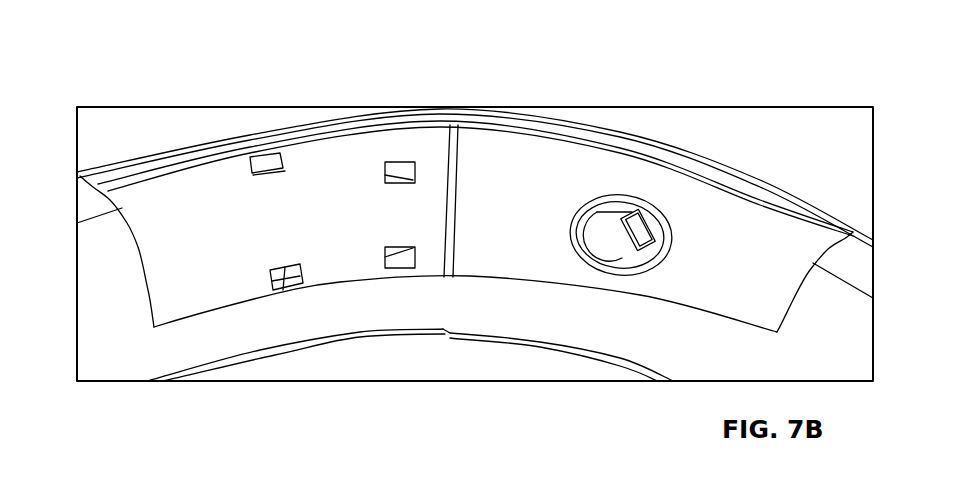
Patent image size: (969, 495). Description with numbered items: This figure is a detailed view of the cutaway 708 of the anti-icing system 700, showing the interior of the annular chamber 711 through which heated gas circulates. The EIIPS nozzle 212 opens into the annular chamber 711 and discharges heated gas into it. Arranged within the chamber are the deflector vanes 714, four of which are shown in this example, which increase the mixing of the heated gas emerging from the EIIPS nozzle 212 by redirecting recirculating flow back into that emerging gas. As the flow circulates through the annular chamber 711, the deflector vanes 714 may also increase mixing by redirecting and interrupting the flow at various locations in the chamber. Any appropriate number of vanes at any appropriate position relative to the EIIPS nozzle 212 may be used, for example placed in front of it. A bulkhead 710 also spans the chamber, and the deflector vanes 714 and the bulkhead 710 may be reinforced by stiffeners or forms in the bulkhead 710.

The anti-icing system 700 is at (146, 53).
The cutaway 708 is at (668, 153).
The bulkhead 710 is at (436, 133).
The annular chamber 711 is at (150, 245).
The EIIPS nozzle 212 is at (607, 220).
The deflector vanes 714 is at (265, 160).